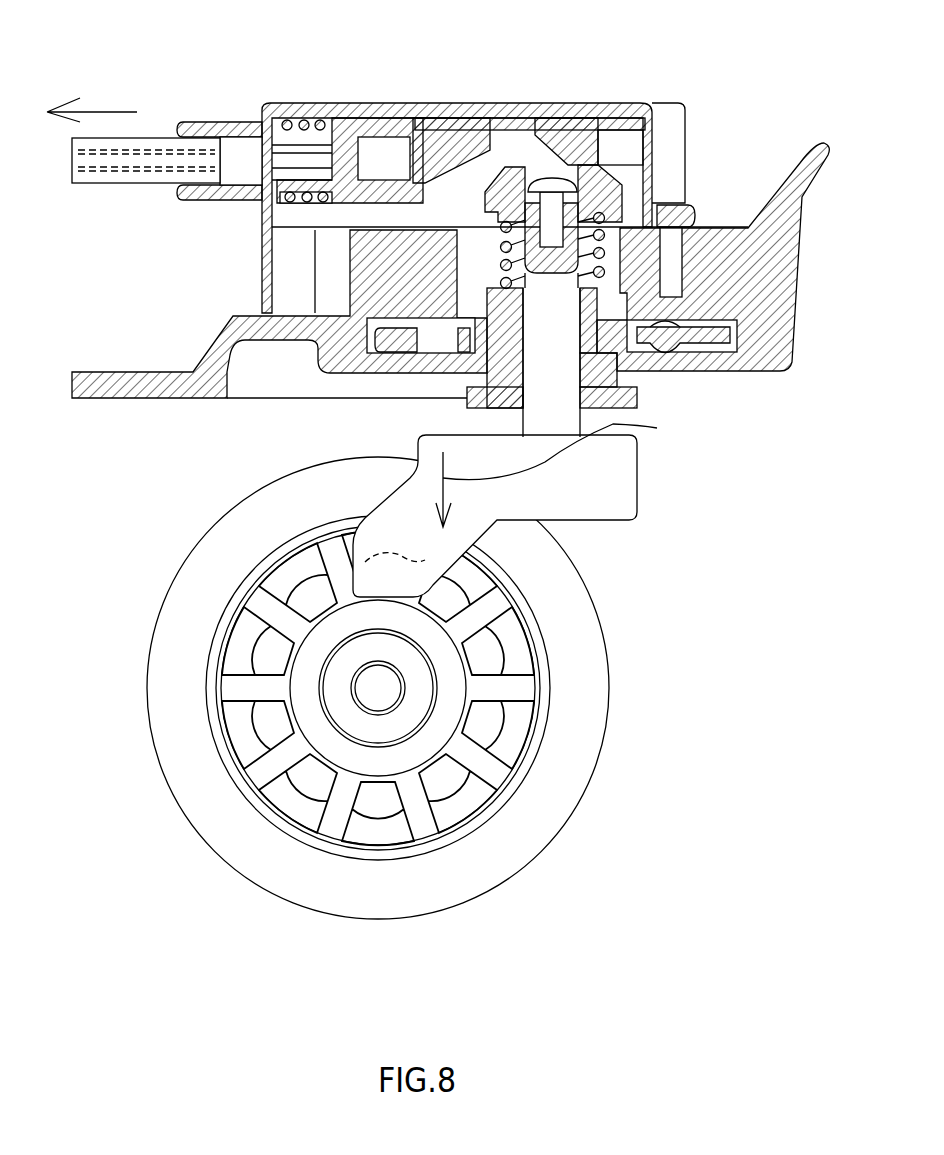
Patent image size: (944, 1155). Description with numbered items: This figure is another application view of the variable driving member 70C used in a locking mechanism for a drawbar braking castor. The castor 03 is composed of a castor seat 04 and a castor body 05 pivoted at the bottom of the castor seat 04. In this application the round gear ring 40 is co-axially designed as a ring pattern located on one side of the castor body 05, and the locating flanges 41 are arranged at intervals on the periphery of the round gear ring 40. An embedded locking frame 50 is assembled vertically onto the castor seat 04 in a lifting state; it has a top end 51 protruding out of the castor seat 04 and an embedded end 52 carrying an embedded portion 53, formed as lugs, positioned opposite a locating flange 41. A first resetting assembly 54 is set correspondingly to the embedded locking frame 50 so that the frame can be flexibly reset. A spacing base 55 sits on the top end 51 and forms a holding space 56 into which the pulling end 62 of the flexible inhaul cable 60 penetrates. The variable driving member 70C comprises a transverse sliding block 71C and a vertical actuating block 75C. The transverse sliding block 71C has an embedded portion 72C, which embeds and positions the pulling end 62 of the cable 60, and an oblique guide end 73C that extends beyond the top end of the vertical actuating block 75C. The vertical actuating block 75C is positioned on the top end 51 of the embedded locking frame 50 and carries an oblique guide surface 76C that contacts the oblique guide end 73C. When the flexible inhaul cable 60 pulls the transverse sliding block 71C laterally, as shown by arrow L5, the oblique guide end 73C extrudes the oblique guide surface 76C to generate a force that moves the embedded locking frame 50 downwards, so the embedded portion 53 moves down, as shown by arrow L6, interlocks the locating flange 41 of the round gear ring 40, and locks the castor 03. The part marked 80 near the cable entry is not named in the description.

The round gear ring 40 is at (466, 670).
The locating flange 41 is at (335, 555).
The embedded locking frame 50 is at (654, 483).
The top end 51 is at (607, 237).
The embedded end 52 is at (432, 587).
The embedded portion 53 is at (395, 570).
The first resetting assembly 54 is at (605, 235).
The spacing base 55 is at (333, 102).
The holding space 56 is at (300, 228).
The flexible inhaul cable 60 is at (108, 185).
The pulling end 62 is at (375, 150).
The collar 80 is at (278, 102).
The variable driving member 70C is at (628, 133).
The transverse sliding block 71C is at (508, 130).
The embedded portion 72C is at (417, 103).
The oblique guide end 73C is at (533, 138).
The vertical actuating block 75C is at (617, 198).
The oblique guide surface 76C is at (605, 190).
The castor 03 is at (72, 522).
The castor seat 04 is at (140, 398).
The castor body 05 is at (183, 560).
The arrow L5 is at (103, 110).
The arrow L6 is at (561, 473).